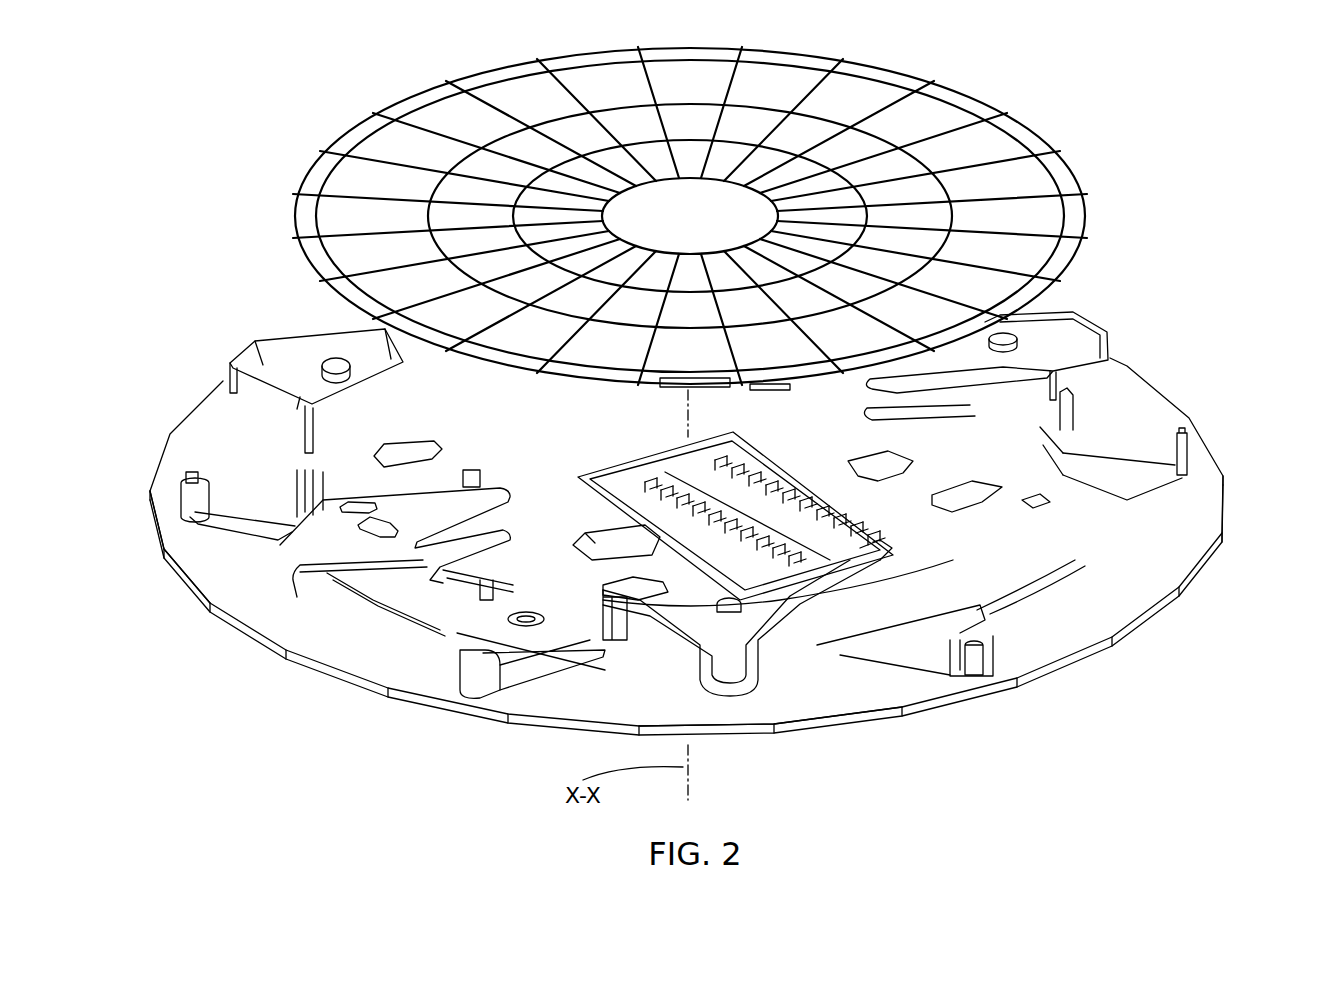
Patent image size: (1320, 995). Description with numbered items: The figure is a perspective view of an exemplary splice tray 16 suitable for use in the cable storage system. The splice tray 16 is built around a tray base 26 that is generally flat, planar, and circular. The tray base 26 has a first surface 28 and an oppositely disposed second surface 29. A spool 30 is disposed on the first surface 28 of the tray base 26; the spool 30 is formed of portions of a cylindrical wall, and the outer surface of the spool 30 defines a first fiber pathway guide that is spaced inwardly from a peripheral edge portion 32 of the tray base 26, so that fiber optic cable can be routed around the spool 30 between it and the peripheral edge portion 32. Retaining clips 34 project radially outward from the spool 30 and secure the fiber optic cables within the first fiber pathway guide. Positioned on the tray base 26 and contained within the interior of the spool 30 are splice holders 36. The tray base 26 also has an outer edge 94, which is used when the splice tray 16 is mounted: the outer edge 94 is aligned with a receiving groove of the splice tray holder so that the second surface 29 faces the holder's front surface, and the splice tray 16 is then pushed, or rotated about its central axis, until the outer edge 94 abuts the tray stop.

The splice tray 16 is at (1204, 257).
The tray base 26 is at (686, 557).
The first surface 28 is at (549, 612).
The second surface 29 is at (1127, 637).
The spool 30 is at (808, 633).
The peripheral edge portion 32 is at (202, 567).
The retaining clips 34 is at (267, 388).
The splice holders 36 is at (770, 468).
The outer edge 94 is at (446, 705).